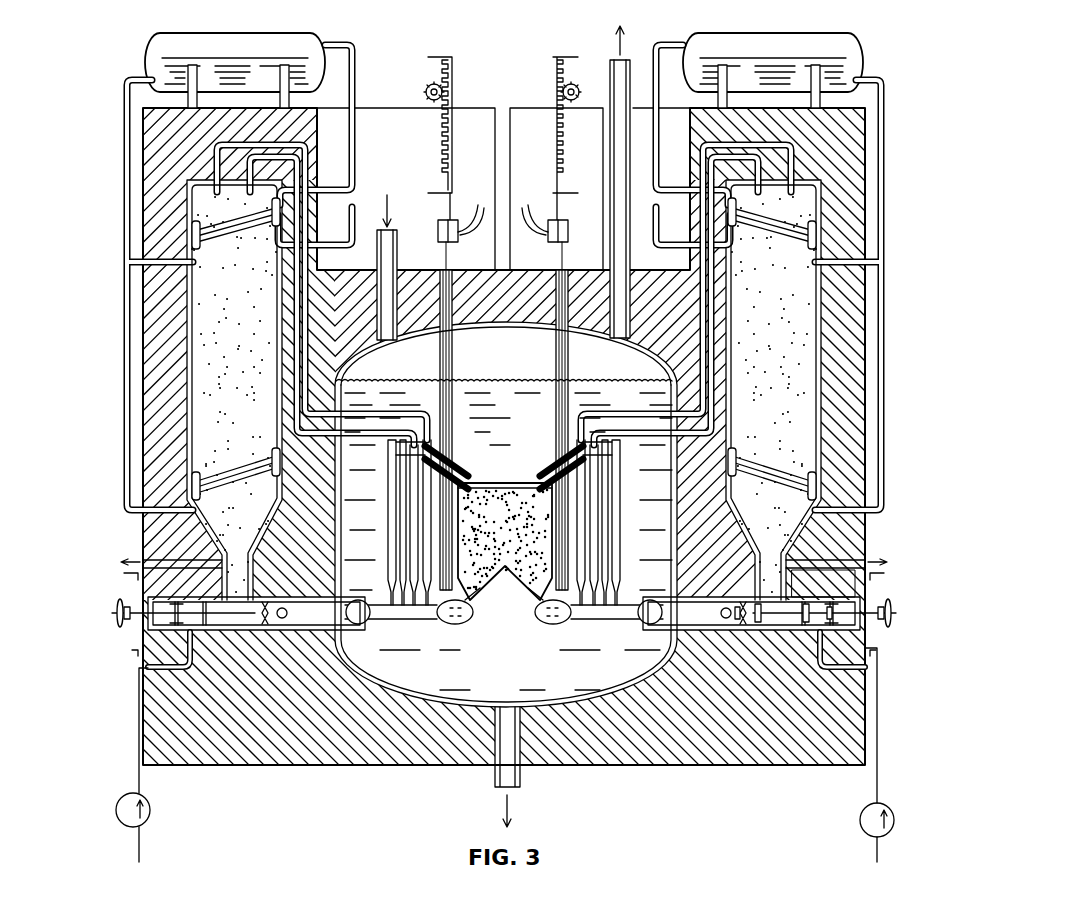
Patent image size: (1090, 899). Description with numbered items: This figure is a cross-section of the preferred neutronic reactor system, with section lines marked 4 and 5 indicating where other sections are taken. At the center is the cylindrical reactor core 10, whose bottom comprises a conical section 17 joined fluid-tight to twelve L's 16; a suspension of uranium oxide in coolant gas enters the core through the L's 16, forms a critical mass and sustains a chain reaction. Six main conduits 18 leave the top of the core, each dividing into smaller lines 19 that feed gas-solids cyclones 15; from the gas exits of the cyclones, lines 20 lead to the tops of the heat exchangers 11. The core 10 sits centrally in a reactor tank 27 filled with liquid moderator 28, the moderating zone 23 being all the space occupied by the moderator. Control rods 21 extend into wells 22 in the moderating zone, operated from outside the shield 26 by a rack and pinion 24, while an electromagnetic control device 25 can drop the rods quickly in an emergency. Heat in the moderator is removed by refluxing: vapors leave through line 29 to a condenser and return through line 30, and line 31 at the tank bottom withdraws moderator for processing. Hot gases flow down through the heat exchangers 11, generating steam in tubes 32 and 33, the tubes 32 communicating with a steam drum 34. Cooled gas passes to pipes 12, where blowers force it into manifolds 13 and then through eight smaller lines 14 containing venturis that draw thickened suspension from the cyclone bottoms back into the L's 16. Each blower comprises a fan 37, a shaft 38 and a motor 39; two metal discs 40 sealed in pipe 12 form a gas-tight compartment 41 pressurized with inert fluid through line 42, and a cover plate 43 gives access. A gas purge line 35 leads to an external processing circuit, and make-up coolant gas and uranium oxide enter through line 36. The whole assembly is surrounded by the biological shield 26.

The section line 4-4 / supply conduit 4 is at (128, 405).
The section line 5- 5 is at (504, 607).
The reactor core 10 is at (512, 483).
The heat exchanger 11 is at (187, 338).
The pipe 12 is at (286, 602).
The manifold 13 is at (368, 625).
The smaller line 14 is at (395, 598).
The cyclone 15 is at (389, 508).
The L 16 is at (548, 624).
The conical section 17 is at (512, 603).
The main conduit 18 is at (476, 462).
The smaller line 19 is at (453, 446).
The line 20 is at (740, 152).
The control rod 21 is at (568, 298).
The well 22 is at (556, 310).
The moderating zone 23 is at (470, 393).
The rack and pinion 24 is at (548, 88).
The electromagnetic control device 25 is at (569, 230).
The shield 26 is at (363, 108).
The reactor tank 27 is at (679, 516).
The liquid moderator 28 is at (390, 378).
The line 29 is at (631, 306).
The line 30 is at (397, 318).
The line 31 is at (522, 780).
The tubes 32 is at (237, 212).
The tubes 33 is at (245, 458).
The steam drum 34 is at (243, 33).
The gas purge line 35 is at (188, 560).
The line 36 is at (288, 626).
The fan 37 is at (732, 630).
The shaft 38 is at (760, 624).
The motor 39 is at (132, 619).
The metal disc 40 is at (804, 596).
The compartment 41 is at (800, 622).
The line 42 is at (832, 670).
The cover plate 43 is at (877, 670).